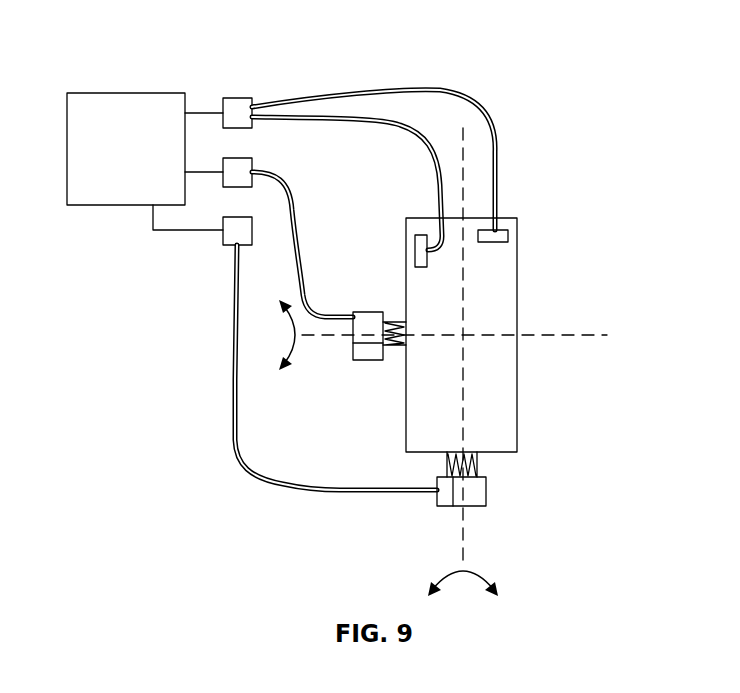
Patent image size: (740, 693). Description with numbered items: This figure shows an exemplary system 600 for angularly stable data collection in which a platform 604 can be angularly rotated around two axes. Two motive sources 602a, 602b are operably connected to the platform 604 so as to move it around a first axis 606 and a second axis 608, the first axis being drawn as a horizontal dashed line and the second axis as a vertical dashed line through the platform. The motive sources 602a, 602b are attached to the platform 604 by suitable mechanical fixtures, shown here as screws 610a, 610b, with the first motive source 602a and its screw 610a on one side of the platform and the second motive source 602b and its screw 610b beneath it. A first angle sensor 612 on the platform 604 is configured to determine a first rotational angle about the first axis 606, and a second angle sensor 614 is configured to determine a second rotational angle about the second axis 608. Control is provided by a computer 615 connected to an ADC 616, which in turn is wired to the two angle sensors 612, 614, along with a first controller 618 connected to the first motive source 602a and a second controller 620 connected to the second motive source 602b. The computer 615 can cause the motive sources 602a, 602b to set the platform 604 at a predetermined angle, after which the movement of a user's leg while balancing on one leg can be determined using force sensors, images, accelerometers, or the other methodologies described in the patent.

The system for angularly stable data collection 600 is at (538, 30).
The computer 615 is at (125, 93).
The ADC 616 is at (245, 98).
The first controller 618 is at (253, 165).
The second controller 620 is at (228, 245).
The platform 604 is at (517, 274).
The first angle sensor 612 is at (415, 237).
The second angle sensor 614 is at (510, 218).
The first axis 606 is at (560, 336).
The second axis 608 is at (464, 536).
The first motive source 602a is at (365, 312).
The second motive source 602b is at (487, 490).
The screw 610a is at (390, 362).
The screw 610b is at (473, 468).